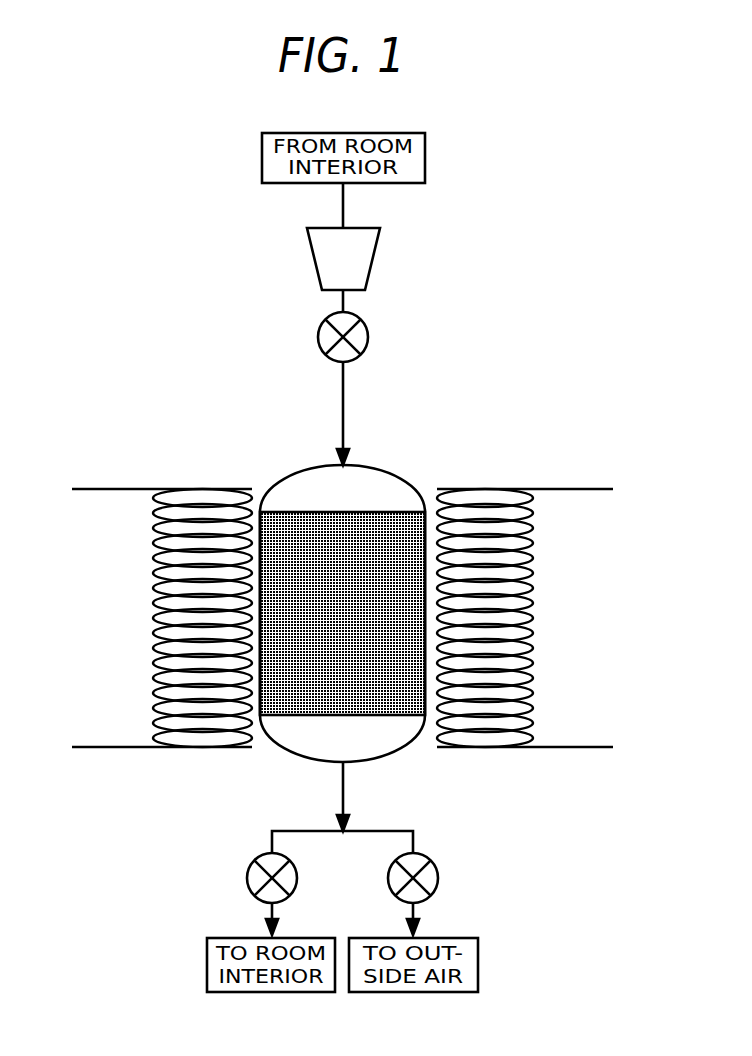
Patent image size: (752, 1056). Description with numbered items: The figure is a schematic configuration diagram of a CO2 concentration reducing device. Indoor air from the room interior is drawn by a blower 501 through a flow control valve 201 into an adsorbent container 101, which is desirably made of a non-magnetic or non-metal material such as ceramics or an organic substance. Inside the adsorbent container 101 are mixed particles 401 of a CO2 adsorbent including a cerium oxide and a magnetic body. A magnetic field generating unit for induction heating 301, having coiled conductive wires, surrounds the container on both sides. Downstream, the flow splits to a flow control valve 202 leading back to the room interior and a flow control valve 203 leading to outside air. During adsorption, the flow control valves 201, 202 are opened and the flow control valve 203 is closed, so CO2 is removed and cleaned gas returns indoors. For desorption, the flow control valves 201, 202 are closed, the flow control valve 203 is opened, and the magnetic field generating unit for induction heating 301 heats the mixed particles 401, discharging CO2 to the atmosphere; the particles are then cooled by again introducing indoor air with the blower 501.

The adsorbent container 101 is at (304, 468).
The flow control valve 201 is at (318, 337).
The flow control valve 202 is at (247, 879).
The flow control valve 203 is at (438, 872).
The magnetic field generating unit for induction heating 301 is at (122, 489).
The mixed particles 401 is at (377, 535).
The blower 501 is at (315, 253).